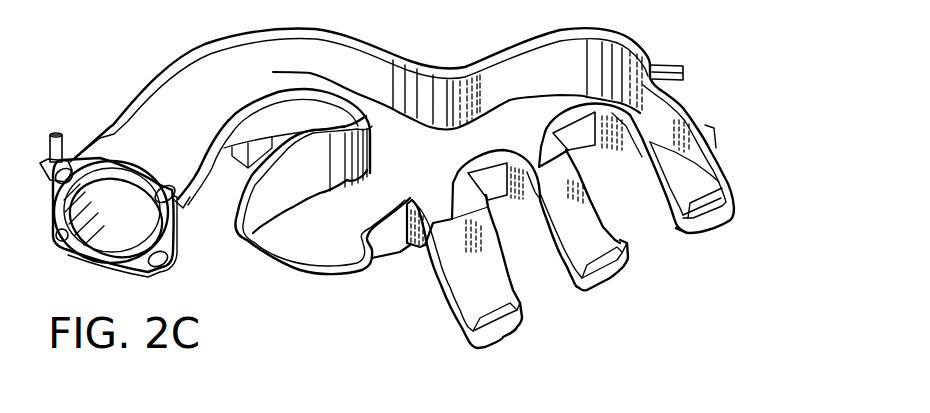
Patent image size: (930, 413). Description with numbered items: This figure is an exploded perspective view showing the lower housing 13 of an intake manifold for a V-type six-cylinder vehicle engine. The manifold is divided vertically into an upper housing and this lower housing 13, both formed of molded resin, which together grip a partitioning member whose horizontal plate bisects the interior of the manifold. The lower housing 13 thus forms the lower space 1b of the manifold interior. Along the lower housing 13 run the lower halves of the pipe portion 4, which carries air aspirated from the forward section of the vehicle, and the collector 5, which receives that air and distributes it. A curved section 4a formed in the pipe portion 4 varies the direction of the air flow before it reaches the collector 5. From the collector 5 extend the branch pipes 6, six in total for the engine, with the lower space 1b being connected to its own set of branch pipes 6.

The lower space 1b is at (227, 70).
The pipe portion 4 is at (117, 117).
The curved section 4a is at (365, 42).
The collector 5 is at (490, 52).
The branch pipes 6 is at (707, 185).
The lower housing 13 is at (729, 82).